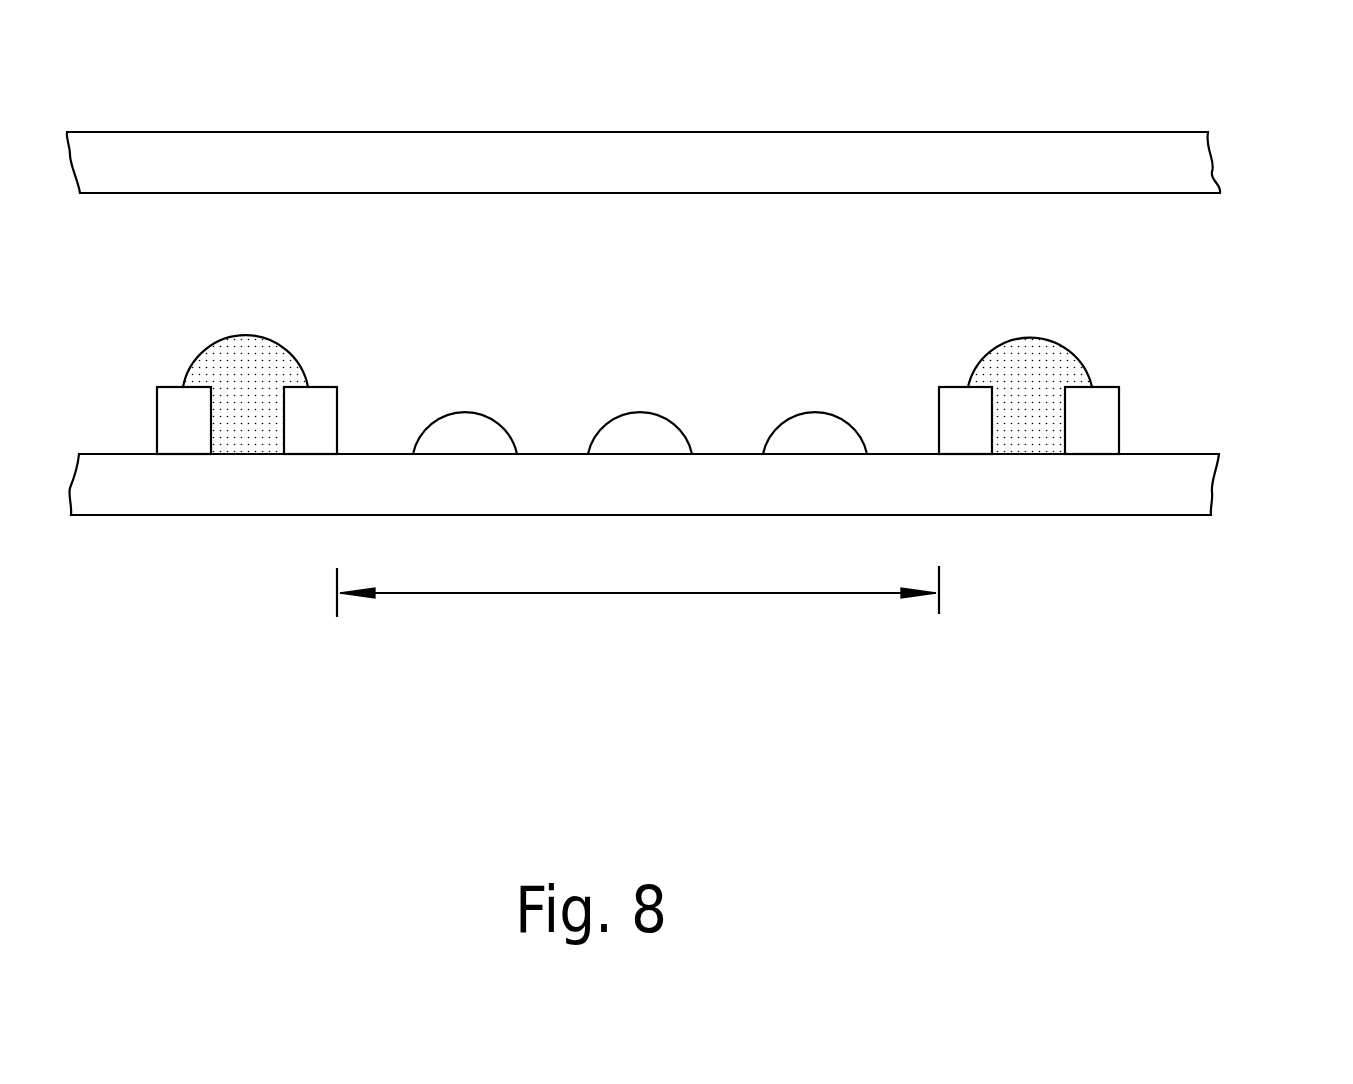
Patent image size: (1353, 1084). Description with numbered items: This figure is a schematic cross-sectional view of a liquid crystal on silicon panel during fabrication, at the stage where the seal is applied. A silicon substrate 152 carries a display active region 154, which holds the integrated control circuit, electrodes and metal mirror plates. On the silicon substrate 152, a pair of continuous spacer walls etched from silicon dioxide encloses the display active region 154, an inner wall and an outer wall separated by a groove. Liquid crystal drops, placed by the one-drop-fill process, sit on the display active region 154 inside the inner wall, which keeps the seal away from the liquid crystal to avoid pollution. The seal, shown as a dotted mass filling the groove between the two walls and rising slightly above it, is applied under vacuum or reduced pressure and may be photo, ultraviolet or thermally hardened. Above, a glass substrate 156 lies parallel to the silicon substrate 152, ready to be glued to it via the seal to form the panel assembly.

The silicon substrate 152 is at (1192, 485).
The display active region 154 is at (638, 582).
The glass substrate 156 is at (1192, 162).